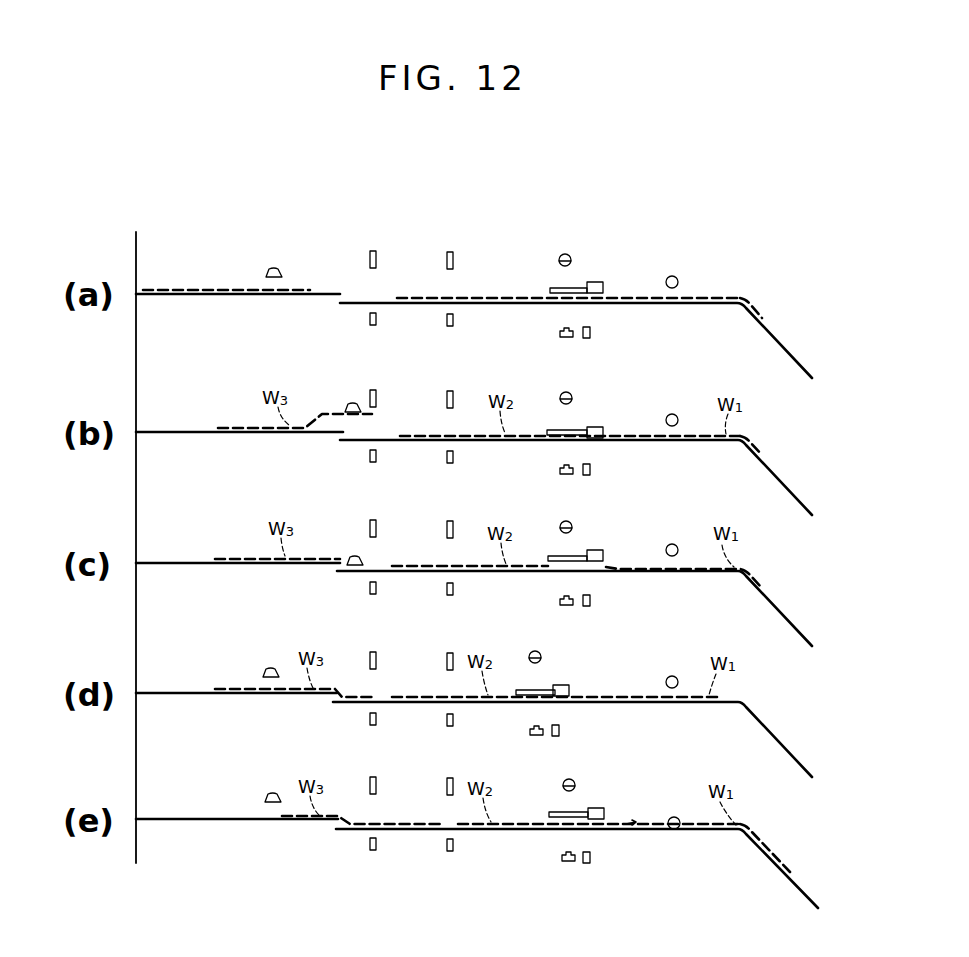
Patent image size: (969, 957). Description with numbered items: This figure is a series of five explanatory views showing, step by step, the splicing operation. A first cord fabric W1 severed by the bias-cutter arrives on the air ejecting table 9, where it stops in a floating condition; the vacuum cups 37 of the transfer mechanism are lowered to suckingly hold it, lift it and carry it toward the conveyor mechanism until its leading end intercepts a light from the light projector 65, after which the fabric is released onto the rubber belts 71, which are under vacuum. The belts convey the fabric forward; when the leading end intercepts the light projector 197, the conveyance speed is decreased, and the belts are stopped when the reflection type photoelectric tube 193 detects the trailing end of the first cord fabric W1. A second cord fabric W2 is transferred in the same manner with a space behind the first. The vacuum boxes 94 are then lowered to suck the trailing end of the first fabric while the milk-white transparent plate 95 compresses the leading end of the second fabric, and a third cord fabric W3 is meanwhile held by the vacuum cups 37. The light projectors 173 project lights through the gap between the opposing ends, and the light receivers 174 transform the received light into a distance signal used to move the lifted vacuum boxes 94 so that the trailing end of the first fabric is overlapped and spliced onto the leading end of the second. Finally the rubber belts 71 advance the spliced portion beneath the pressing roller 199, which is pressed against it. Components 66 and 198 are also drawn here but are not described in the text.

The air ejecting table 9 is at (232, 298).
The vacuum cups 37 is at (282, 272).
The light projector 65 is at (373, 249).
The sensor 66 is at (368, 320).
The rubber belts 71 is at (678, 312).
The vacuum boxes 94 is at (597, 281).
The milk-white transparent plate 95 is at (554, 287).
The light projectors 173 is at (565, 253).
The light receivers 174 is at (559, 333).
The reflection type photoelectric tube 193 is at (591, 332).
The light projector 197 is at (450, 250).
The sensor 198 is at (453, 323).
The pressing roller 199 is at (676, 276).
The first cord fabric W1 is at (742, 297).
The second cord fabric W2 is at (421, 296).
The third cord fabric W3 is at (244, 288).